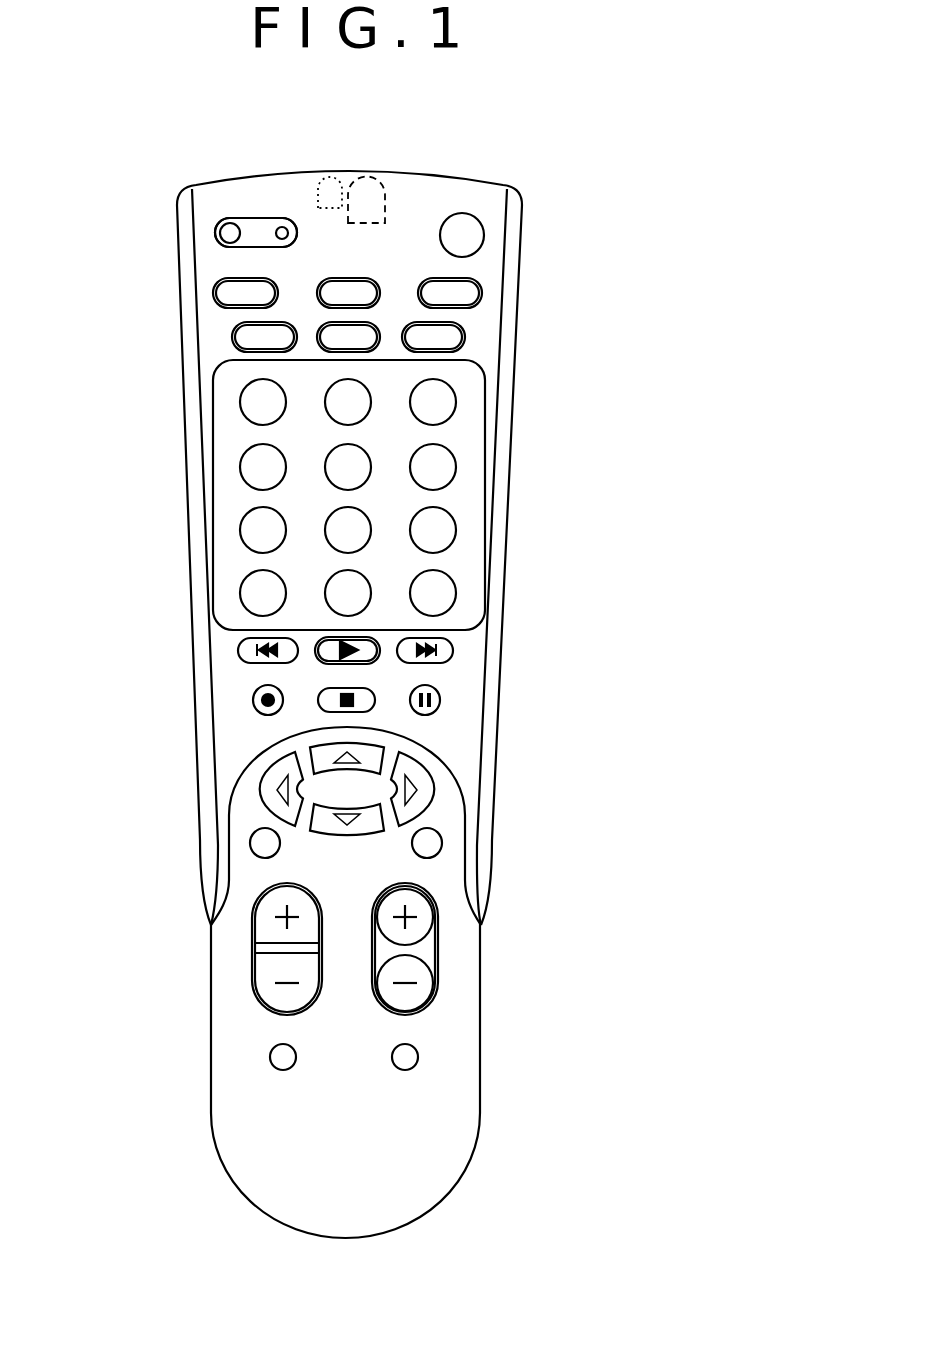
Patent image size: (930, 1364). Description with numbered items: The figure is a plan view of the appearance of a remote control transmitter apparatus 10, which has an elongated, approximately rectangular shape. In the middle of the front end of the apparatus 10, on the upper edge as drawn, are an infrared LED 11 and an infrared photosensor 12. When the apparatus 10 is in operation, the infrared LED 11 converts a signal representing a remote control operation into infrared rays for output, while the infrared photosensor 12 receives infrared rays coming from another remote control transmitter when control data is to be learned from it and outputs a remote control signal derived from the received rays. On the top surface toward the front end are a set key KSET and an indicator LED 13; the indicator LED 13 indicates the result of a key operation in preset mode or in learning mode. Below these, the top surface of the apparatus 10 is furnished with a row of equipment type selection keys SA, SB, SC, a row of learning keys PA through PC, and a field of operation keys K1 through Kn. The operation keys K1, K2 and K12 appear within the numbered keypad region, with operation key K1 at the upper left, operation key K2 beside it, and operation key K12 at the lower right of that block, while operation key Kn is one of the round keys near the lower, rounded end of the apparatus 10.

The remote control transmitter apparatus 10 is at (270, 1297).
The infrared LED 11 is at (365, 170).
The infrared photosensor 12 is at (328, 163).
The indicator LED 13 is at (278, 227).
The set key KSET is at (214, 232).
The equipment type selection key SA is at (215, 292).
The equipment type selection key SB is at (377, 278).
The equipment type selection key SC is at (481, 298).
The learning key PA is at (236, 337).
The learning key PC is at (466, 337).
The operation key K1 is at (240, 402).
The operation key K2 is at (366, 402).
The operation key K12 is at (447, 595).
The operation key Kn is at (410, 1055).